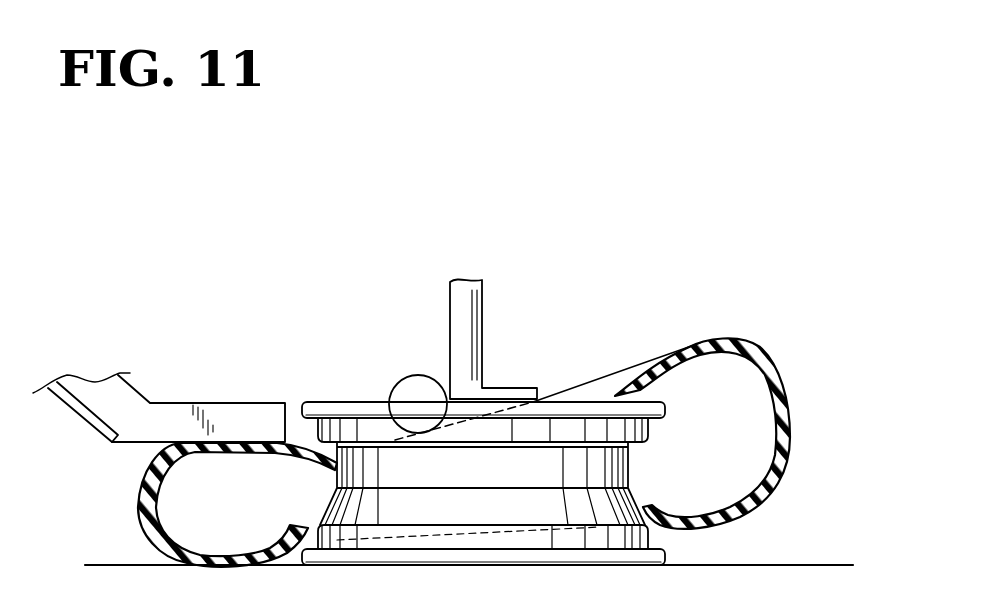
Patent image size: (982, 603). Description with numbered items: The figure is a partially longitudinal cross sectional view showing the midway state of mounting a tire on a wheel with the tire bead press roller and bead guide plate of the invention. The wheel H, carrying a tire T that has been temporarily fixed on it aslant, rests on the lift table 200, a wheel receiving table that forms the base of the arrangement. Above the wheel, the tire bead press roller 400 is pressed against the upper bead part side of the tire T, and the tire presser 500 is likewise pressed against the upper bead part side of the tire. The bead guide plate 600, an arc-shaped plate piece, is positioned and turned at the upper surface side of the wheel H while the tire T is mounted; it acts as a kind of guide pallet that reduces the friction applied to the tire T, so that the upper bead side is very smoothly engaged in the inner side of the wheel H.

The tire presser 500 is at (240, 403).
The tire bead press roller 400 is at (418, 382).
The bead guide plate 600 is at (477, 337).
The wheel H is at (613, 402).
The tire T is at (788, 382).
The lift table 200 is at (787, 562).